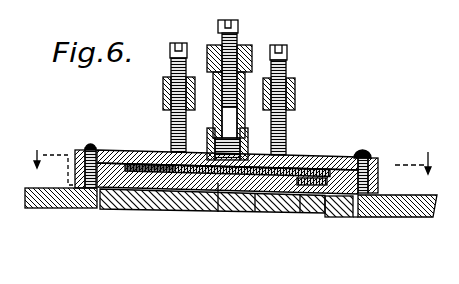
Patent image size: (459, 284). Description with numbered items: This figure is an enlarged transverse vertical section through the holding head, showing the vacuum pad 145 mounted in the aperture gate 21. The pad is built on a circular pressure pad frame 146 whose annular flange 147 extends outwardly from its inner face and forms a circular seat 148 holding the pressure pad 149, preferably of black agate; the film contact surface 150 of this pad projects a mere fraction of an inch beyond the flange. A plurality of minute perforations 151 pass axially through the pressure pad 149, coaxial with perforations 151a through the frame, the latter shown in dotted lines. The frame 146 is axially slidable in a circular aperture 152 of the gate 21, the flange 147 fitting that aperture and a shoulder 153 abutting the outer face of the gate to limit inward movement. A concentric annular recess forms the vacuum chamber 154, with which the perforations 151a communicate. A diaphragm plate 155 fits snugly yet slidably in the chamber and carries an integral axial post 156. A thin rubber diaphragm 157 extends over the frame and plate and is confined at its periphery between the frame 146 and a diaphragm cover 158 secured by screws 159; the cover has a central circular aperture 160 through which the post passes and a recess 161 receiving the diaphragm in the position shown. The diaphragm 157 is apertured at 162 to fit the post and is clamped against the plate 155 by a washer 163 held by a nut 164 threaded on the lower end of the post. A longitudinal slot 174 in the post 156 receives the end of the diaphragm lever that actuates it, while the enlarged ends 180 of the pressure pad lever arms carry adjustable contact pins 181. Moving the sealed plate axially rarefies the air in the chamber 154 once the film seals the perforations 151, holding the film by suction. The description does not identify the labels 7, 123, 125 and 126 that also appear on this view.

The section line 7 is at (233, 165).
The aperture gate 21 is at (227, 178).
The sleeve 123 is at (216, 89).
The screw 125 is at (240, 35).
The nut 126 is at (214, 47).
The vacuum pad 145 is at (337, 145).
The pressure pad frame 146 is at (378, 172).
The annular flange 147 is at (356, 216).
The circular seat 148 is at (327, 215).
The pressure pad 149 is at (252, 212).
The film contact surface 150 is at (128, 211).
The perforations 151 is at (162, 201).
The perforations 151a is at (238, 215).
The circular aperture 152 is at (96, 208).
The shoulder 153 is at (75, 171).
The vacuum chamber 154 is at (104, 152).
The diaphragm plate 155 is at (296, 160).
The axial post 156 is at (248, 127).
The diaphragm 157 is at (315, 158).
The diaphragm cover 158 is at (100, 133).
The screws 159 is at (100, 133).
The circular aperture 160 is at (193, 160).
The recess 161 is at (136, 157).
The aperture 162 is at (218, 213).
The washer 163 is at (294, 116).
The nut 164 is at (297, 100).
The longitudinal slot 174 is at (240, 139).
The enlarged ends 180 is at (164, 88).
The adjustable contact pins 181 is at (170, 57).